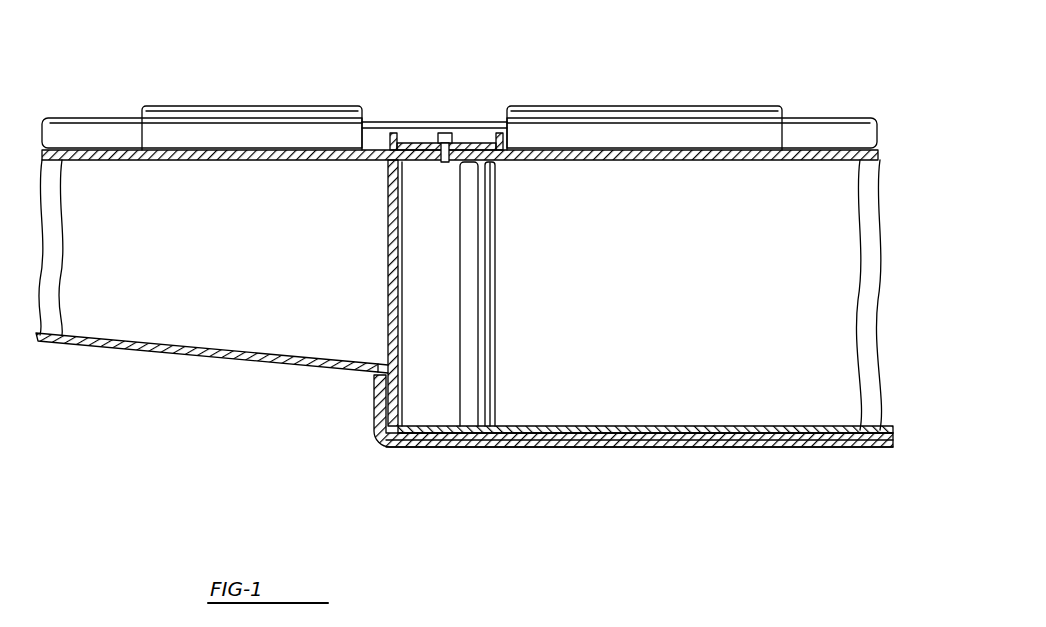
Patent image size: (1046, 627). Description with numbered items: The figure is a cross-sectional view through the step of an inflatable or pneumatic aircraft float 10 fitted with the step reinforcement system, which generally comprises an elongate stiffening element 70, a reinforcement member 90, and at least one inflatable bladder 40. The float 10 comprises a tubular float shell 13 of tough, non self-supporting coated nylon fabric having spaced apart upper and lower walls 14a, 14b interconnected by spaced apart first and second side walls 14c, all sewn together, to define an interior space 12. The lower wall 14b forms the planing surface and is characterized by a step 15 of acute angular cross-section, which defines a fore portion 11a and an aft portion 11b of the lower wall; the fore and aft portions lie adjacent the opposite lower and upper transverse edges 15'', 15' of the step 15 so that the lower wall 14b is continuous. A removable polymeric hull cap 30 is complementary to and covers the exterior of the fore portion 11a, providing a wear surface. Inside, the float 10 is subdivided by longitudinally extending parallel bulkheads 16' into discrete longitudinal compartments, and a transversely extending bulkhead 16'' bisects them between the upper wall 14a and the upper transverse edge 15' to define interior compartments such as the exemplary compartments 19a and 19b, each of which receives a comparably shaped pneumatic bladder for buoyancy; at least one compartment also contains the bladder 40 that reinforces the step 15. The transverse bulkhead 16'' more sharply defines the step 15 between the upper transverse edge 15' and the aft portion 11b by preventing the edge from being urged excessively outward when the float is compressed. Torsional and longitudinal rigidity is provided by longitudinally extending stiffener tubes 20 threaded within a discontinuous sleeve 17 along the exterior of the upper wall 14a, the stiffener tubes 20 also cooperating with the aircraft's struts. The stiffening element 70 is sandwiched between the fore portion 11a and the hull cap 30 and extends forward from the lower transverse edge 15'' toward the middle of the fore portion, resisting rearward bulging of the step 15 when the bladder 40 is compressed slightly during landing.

The float 10 is at (226, 414).
The fore portion 11a is at (632, 456).
The aft portion 11b is at (178, 360).
The interior space 12 is at (258, 260).
The tubular float shell 13 is at (880, 150).
The upper wall 14a is at (696, 150).
The lower wall 14b is at (780, 434).
The side walls 14c is at (62, 212).
The step 15 is at (207, 409).
The upper transverse edge 15' is at (338, 333).
The lower transverse edge 15'' is at (633, 455).
The bulkheads 16' is at (460, 246).
The transverse bulkhead 16'' is at (346, 293).
The discontinuous sleeve 17 is at (300, 118).
The interior compartment 19a is at (808, 172).
The interior compartment 19b is at (196, 120).
The stiffener tube 20 is at (415, 122).
The hull cap 30 is at (562, 448).
The bladder 40 is at (490, 352).
The stiffening element 70 is at (718, 448).
The reinforcement member 90 is at (476, 118).